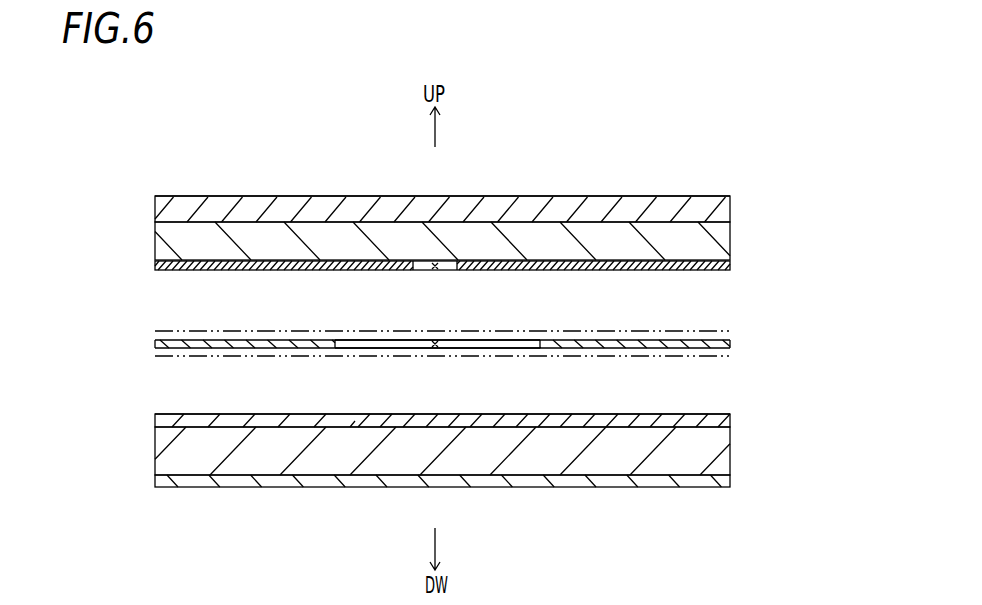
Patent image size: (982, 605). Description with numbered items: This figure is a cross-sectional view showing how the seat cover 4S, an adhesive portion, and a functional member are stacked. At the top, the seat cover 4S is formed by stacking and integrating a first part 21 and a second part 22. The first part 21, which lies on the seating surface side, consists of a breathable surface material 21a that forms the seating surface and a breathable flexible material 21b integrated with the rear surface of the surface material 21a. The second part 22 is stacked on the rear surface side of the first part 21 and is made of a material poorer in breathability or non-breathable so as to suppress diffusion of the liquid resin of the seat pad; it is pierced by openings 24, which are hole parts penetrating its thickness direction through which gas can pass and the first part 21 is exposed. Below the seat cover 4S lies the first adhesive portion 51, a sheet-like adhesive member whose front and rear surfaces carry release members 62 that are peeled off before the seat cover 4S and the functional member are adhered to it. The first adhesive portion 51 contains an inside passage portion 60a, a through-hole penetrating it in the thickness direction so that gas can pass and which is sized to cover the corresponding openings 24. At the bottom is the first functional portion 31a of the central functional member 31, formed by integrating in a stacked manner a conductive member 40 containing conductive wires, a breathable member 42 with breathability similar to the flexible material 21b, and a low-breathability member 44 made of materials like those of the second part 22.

The seat cover 4S is at (609, 186).
The first part 21 is at (80, 193).
The surface material 21a is at (172, 208).
The flexible material 21b is at (172, 242).
The second part 22 is at (155, 265).
The opening 24 is at (435, 270).
The first adhesive portion 51 is at (715, 329).
The release member 62 is at (625, 330).
The inside passage portion 60a is at (435, 347).
The central functional member 31 is at (456, 437).
The first functional portion 31a is at (715, 401).
The conductive member 40 is at (167, 420).
The breathable member 42 is at (167, 450).
The low-breathability member 44 is at (167, 482).